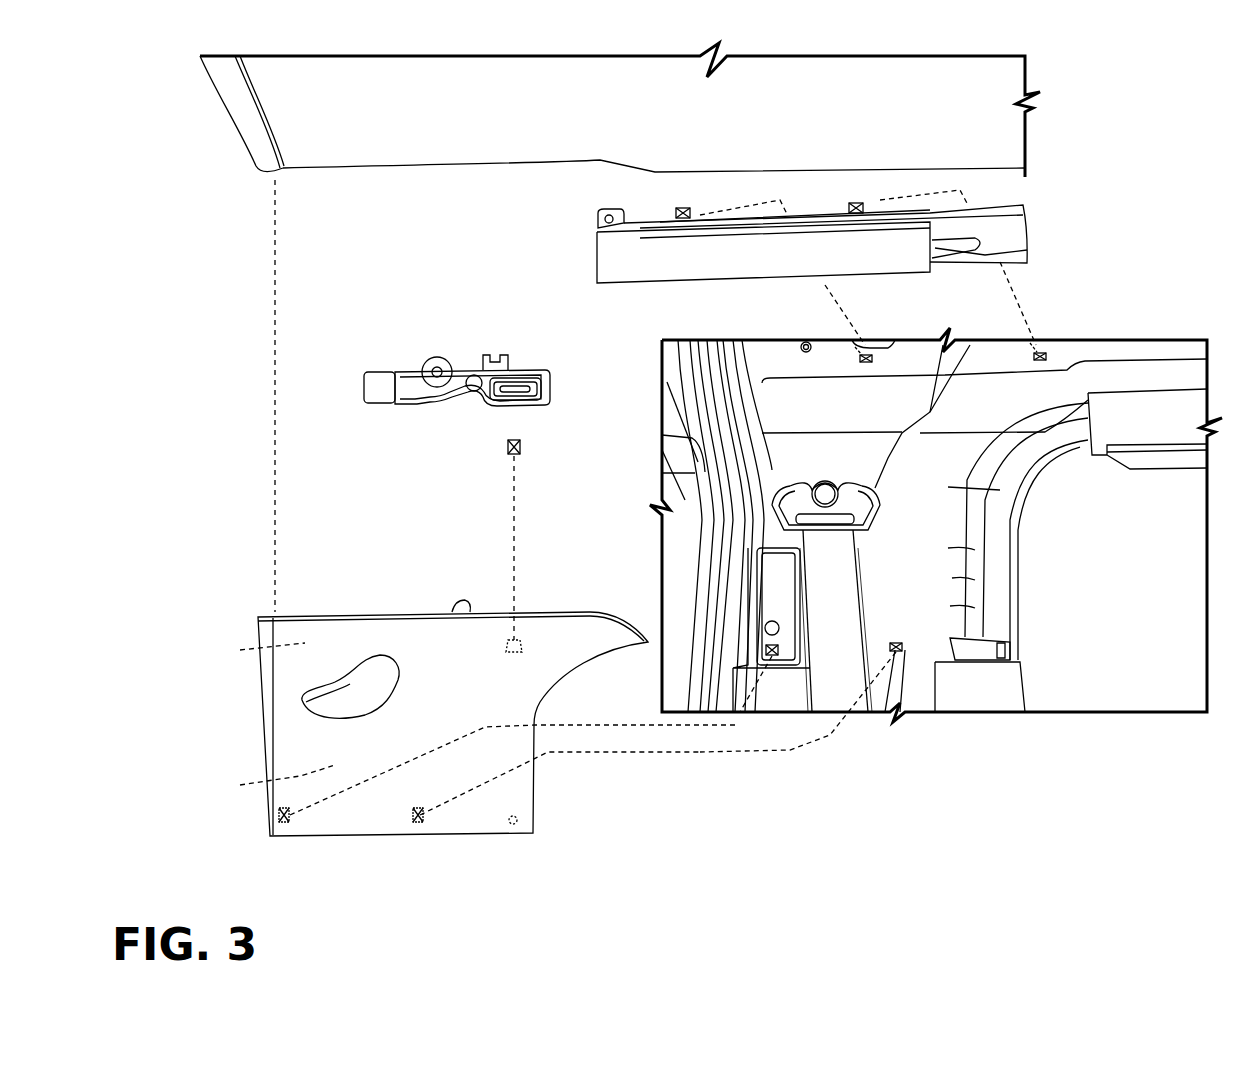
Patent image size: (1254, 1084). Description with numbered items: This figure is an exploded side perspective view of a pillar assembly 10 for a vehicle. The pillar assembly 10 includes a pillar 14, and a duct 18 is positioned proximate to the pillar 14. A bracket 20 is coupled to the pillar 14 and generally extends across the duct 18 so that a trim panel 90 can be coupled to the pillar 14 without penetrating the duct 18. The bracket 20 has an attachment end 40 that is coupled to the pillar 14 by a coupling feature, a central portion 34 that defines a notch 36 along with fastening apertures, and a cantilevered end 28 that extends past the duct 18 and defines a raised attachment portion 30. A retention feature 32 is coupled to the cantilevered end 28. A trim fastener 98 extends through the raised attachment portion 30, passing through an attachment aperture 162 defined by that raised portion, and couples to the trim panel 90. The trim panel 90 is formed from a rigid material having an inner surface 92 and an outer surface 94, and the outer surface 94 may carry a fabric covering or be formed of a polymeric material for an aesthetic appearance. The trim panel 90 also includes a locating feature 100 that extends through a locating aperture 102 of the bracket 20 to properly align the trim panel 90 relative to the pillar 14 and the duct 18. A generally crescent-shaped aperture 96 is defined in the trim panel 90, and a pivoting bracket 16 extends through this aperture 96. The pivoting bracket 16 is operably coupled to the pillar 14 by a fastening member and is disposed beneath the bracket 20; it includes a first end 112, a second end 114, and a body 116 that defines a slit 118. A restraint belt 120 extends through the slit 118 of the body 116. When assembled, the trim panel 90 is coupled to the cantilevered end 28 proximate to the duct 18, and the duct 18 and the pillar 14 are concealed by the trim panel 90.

The pillar assembly 10 is at (208, 310).
The pillar 14 is at (772, 468).
The pivoting bracket 16 is at (770, 535).
The duct 18 is at (947, 592).
The bracket 20 is at (448, 389).
The cantilevered end 28 is at (548, 376).
The raised attachment portion 30 is at (530, 378).
The retention feature 32 is at (496, 352).
The central portion 34 is at (412, 378).
The notch 36 is at (462, 372).
The attachment end 40 is at (365, 393).
The trim panel 90 is at (430, 684).
The inner surface 92 is at (240, 786).
The outer surface 94 is at (485, 678).
The aperture 96 is at (338, 736).
The trim fastener 98 is at (520, 440).
The locating feature 100 is at (462, 603).
The locating aperture 102 is at (470, 386).
The first end 112 is at (763, 633).
The second end 114 is at (866, 508).
The body 116 is at (783, 525).
The slit 118 is at (818, 560).
The restraint belt 120 is at (833, 680).
The attachment aperture 162 is at (505, 396).